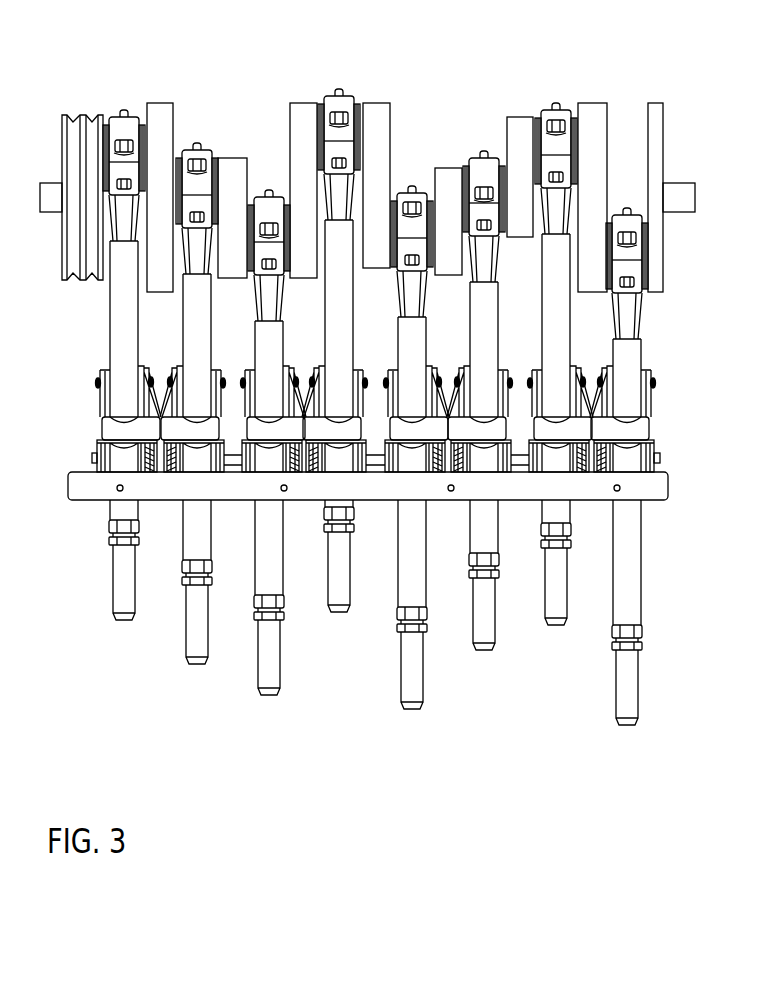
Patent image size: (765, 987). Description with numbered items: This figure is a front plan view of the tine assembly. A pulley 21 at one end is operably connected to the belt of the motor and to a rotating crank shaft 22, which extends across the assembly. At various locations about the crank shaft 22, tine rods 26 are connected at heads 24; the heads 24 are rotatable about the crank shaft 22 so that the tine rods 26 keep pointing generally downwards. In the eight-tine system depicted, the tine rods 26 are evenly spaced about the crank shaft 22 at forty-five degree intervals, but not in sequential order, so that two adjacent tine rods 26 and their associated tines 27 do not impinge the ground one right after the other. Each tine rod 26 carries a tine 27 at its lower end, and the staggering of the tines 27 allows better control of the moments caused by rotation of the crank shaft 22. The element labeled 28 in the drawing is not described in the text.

The pulley 21 is at (182, 40).
The crank shaft 22 is at (533, 32).
The head 24 is at (330, 103).
The tine rod 26 is at (128, 322).
The tine 27 is at (92, 730).
The mounting plate 28 is at (48, 553).